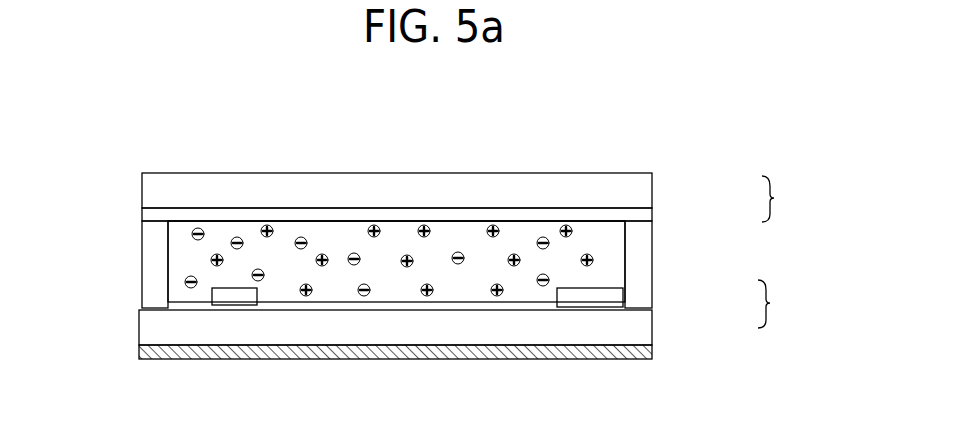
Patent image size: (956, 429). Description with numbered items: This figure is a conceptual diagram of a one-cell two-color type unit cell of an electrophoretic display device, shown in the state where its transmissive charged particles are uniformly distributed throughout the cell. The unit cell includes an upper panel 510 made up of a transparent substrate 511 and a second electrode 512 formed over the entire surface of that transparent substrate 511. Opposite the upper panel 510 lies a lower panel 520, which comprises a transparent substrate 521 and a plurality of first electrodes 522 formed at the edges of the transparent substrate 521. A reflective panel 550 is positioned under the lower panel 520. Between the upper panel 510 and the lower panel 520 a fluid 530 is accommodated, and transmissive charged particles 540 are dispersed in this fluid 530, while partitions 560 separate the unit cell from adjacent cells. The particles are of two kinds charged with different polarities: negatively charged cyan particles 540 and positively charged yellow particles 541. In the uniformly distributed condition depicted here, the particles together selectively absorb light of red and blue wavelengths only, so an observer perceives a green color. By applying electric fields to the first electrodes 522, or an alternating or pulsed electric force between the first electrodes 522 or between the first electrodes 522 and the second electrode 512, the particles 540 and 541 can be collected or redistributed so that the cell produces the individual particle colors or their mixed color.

The upper panel 510 is at (794, 200).
The transparent substrate 511 is at (645, 191).
The second electrode 512 is at (652, 215).
The lower panel 520 is at (790, 304).
The transparent substrate 521 is at (640, 328).
The first electrodes 522 is at (598, 296).
The fluid 530 is at (190, 245).
The transmissive charged particles 540 is at (459, 252).
The yellow particles 541 is at (593, 260).
The reflective panel 550 is at (633, 355).
The partitions 560 is at (158, 282).